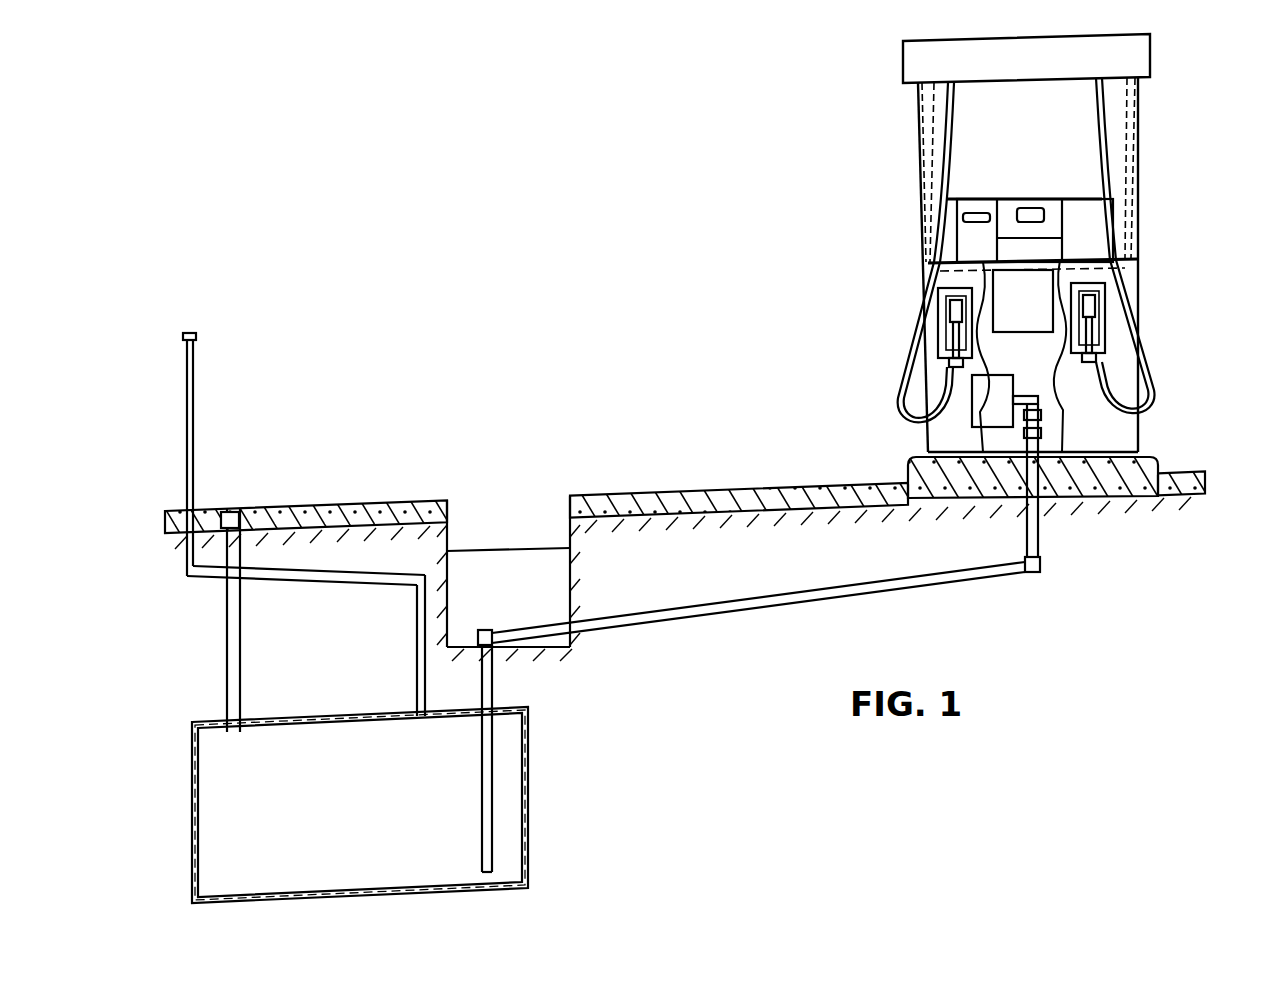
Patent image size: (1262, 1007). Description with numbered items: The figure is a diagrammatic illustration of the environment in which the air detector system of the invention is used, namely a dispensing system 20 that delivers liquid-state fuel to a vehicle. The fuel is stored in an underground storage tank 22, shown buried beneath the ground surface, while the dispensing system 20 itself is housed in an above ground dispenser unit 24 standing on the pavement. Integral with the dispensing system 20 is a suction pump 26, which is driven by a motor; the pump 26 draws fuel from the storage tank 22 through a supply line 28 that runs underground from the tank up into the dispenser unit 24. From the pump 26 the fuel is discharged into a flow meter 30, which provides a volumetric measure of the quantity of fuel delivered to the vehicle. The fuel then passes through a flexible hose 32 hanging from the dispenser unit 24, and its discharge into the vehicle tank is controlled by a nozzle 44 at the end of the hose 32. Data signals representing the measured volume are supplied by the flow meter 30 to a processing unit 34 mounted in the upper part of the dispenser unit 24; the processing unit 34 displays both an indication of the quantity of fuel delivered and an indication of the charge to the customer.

The dispensing system 20 is at (548, 305).
The underground storage tank 22 is at (360, 818).
The above ground dispenser unit 24 is at (1150, 222).
The suction pump 26 is at (1012, 350).
The supply line 28 is at (706, 612).
The flow meter 30 is at (1056, 380).
The flexible hose 32 is at (1100, 125).
The processing unit 34 is at (1028, 178).
The nozzle 44 is at (1090, 314).